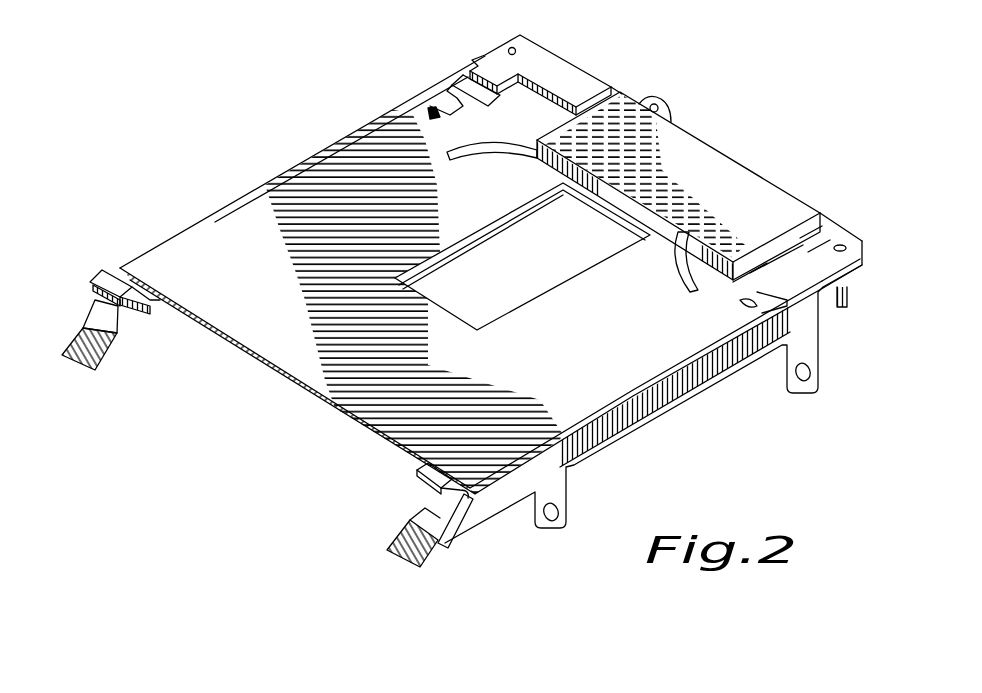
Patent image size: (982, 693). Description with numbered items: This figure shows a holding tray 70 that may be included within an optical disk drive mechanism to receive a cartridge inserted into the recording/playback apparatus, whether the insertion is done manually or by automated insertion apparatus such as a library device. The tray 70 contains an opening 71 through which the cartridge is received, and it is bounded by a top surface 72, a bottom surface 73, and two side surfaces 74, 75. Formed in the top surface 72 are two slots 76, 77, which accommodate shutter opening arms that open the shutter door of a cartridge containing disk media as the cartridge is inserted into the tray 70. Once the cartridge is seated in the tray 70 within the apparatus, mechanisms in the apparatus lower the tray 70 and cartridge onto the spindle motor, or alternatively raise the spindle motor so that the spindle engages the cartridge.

The holding tray 70 is at (245, 163).
The opening 71 is at (437, 505).
The top surface 72 is at (362, 140).
The bottom surface 73 is at (130, 305).
The side surface 74 is at (670, 413).
The side surface 75 is at (300, 163).
The slot 76 is at (523, 142).
The slot 77 is at (678, 262).